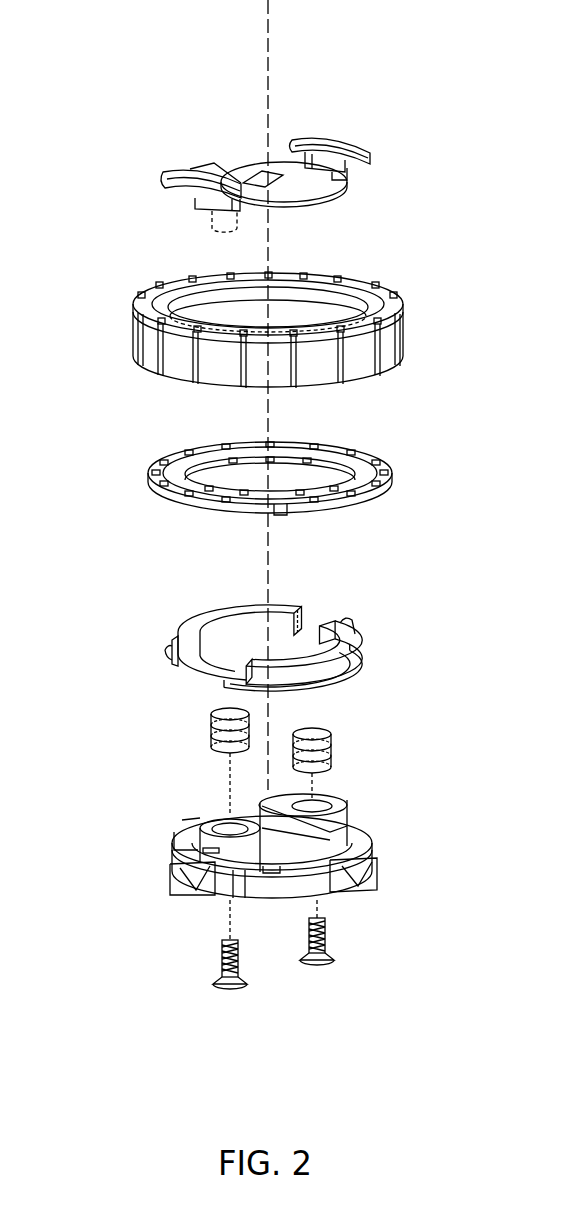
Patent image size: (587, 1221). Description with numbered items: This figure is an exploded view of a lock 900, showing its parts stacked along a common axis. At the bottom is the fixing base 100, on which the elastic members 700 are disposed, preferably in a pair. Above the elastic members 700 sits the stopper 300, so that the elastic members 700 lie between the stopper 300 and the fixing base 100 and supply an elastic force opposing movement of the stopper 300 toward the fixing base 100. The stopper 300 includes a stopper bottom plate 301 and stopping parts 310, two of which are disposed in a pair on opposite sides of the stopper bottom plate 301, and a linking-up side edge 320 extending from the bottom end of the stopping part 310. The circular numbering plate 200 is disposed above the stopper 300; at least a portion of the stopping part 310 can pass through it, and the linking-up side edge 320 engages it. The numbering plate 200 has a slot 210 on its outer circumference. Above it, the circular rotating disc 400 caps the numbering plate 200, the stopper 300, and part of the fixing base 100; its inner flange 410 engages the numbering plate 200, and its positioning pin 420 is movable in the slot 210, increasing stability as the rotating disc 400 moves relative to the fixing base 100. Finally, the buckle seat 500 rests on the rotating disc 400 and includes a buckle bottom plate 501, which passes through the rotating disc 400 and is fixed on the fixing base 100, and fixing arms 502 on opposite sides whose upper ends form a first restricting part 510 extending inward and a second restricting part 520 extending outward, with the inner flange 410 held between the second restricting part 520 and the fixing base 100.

The lock 900 is at (125, 72).
The buckle seat 500 is at (249, 175).
The buckle bottom plate 501 is at (307, 185).
The fixing arm 502 is at (347, 172).
The first restricting part 510 is at (307, 140).
The second restricting part 520 is at (345, 152).
The rotating disc 400 is at (253, 329).
The inner flange 410 is at (393, 296).
The positioning pin 420 is at (266, 285).
The numbering plate 200 is at (254, 496).
The slot 210 is at (287, 513).
The stopper 300 is at (258, 651).
The stopper bottom plate 301 is at (223, 660).
The stopping part 310 is at (345, 625).
The linking-up side edge 320 is at (363, 650).
The elastic member 700 is at (332, 737).
The fixing base 100 is at (138, 883).